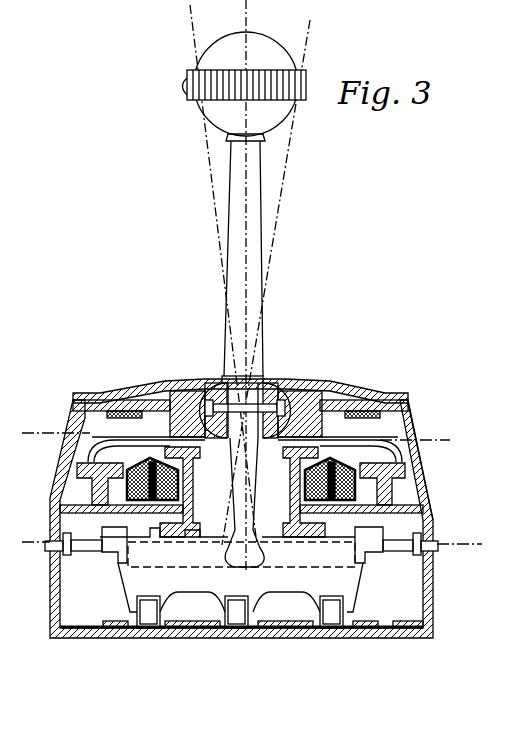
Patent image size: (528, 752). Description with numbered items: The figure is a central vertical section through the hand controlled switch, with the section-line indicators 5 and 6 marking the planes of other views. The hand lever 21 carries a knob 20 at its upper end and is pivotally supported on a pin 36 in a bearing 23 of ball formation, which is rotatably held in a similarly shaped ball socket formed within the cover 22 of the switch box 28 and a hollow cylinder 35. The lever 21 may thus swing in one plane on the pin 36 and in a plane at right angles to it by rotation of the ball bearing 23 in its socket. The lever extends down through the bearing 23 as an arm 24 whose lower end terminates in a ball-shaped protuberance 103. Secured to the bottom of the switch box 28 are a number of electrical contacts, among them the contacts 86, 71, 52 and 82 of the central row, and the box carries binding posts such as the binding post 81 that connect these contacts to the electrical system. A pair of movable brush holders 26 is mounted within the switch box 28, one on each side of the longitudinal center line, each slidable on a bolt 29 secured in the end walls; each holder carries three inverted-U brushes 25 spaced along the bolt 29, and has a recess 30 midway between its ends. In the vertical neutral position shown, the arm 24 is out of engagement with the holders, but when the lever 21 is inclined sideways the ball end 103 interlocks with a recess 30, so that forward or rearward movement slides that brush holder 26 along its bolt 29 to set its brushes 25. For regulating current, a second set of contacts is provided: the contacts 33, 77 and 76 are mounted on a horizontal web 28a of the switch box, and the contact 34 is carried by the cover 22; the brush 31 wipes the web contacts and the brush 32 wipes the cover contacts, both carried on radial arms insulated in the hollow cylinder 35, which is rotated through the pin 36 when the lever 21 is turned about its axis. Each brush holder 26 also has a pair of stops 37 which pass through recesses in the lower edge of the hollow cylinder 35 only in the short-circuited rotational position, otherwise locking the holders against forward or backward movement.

The section line 5- 5 is at (233, 440).
The section line 6- 6 is at (249, 546).
The knob 20 is at (205, 112).
The hand lever 21 is at (255, 237).
The cover 22 is at (176, 385).
The bearing 23 is at (275, 382).
The arm 24 is at (256, 487).
The brushes 25 is at (148, 608).
The brush holders 26 is at (130, 582).
The switch box 28 is at (56, 558).
The horizontal web 28a is at (424, 510).
The bolt 29 is at (84, 548).
The recess 30 is at (248, 562).
The brush 31 is at (243, 456).
The brush 32 is at (376, 430).
The contact 33 is at (92, 497).
The contact 34 is at (125, 405).
The hollow cylinder 35 is at (188, 478).
The pin 36 is at (214, 392).
The stops 37 is at (198, 540).
The contact 52 is at (278, 639).
The contact 71 is at (184, 639).
The contact 76 is at (237, 477).
The contact 77 is at (251, 477).
The binding post 81 is at (410, 639).
The contact 82 is at (362, 639).
The contact 86 is at (111, 639).
The ball-shaped protuberance 103 is at (262, 556).